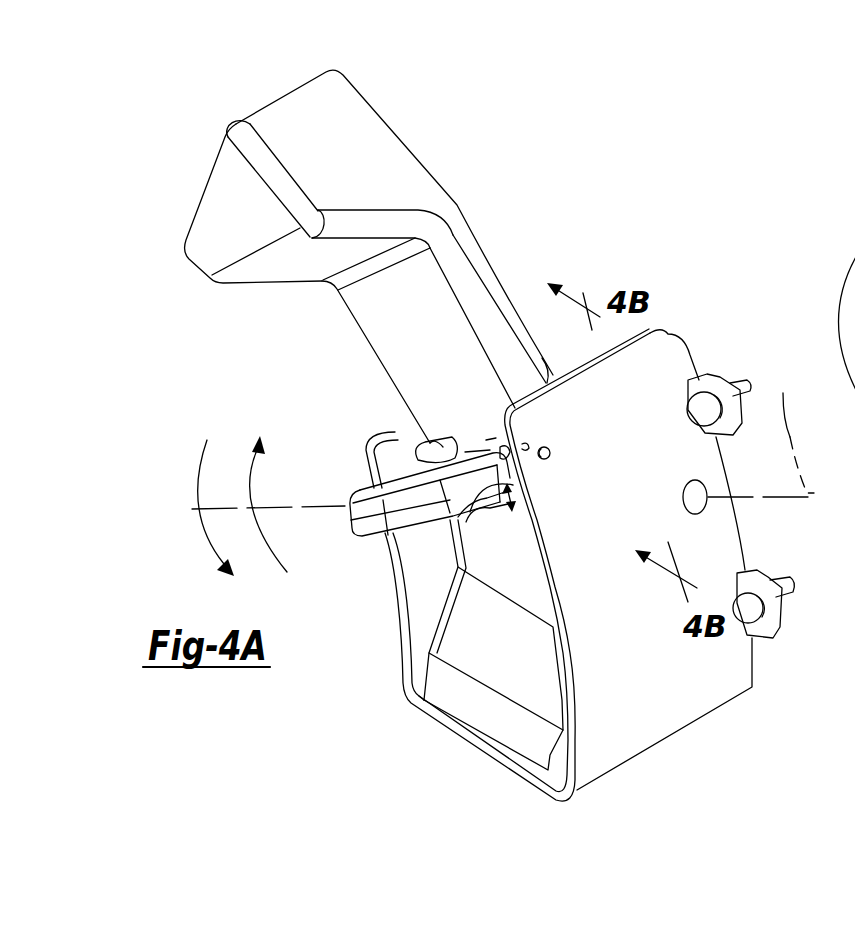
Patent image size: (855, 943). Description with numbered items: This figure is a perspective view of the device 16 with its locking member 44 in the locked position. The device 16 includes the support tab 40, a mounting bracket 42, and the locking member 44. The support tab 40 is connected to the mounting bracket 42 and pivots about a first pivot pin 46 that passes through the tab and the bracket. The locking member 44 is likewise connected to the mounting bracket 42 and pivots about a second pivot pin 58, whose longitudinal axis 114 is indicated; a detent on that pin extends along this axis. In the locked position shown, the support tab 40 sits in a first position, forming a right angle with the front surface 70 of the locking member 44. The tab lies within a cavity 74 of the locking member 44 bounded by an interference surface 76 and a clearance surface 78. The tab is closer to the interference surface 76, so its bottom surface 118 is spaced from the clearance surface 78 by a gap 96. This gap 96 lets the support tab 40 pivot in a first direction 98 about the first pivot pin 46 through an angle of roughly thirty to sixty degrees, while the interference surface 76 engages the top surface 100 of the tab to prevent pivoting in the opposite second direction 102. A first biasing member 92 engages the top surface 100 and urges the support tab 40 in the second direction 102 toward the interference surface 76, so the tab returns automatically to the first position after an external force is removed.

The device 16 is at (182, 154).
The locking member 44 is at (373, 170).
The front surface 70 is at (380, 288).
The mounting bracket 42 is at (713, 688).
The second pivot pin 58 is at (707, 507).
The longitudinal axis 114 is at (795, 429).
The first pivot pin 46 is at (550, 453).
The bottom surface 118 is at (380, 543).
The clearance surface 78 is at (480, 520).
The support tab 40 is at (360, 522).
The cavity 74 is at (467, 518).
The interference surface 76 is at (427, 462).
The top surface 100 is at (444, 447).
The first biasing member 92 is at (490, 437).
The gap 96 is at (520, 497).
The second direction 102 is at (198, 496).
The first direction 98 is at (258, 520).